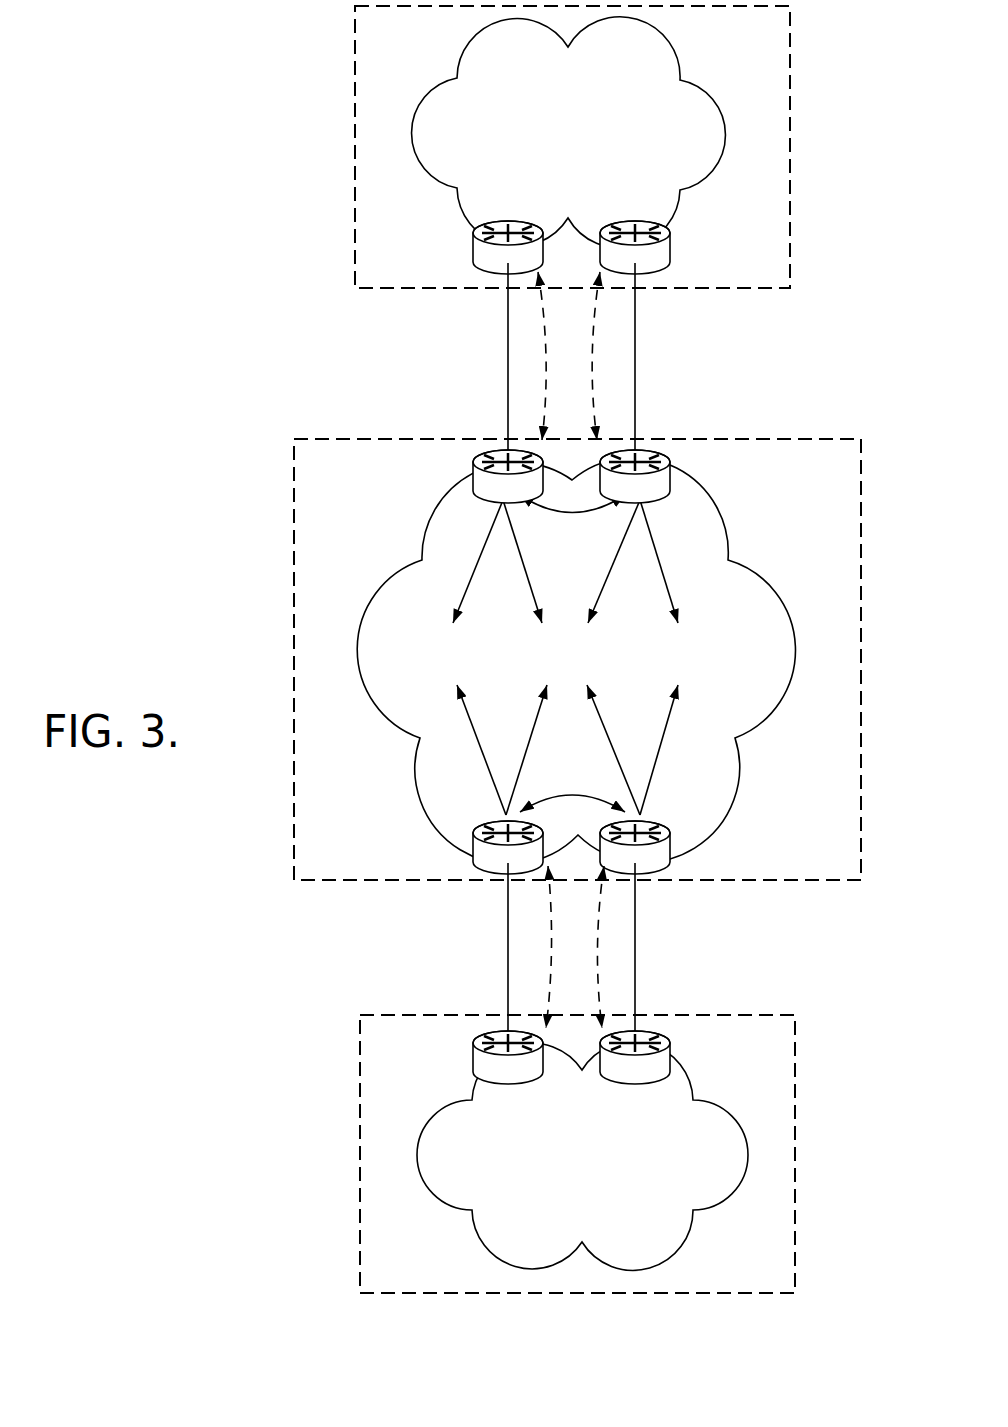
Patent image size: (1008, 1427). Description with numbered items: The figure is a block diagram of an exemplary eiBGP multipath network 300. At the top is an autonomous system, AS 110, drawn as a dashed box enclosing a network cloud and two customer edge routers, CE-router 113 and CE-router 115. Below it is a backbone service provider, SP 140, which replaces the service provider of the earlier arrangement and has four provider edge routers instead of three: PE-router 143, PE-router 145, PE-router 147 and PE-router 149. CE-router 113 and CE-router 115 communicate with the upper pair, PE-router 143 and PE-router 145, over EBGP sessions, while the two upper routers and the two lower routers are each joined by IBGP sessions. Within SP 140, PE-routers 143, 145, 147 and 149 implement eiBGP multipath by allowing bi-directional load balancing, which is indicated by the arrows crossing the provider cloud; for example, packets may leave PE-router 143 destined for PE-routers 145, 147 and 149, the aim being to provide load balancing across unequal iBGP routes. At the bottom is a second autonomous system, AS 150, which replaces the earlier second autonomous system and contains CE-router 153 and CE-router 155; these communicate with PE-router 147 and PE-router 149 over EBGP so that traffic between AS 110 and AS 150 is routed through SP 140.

The eiBGP multipath network 300 is at (175, 215).
The AS 110 is at (355, 102).
The CE-router 113 is at (488, 266).
The CE-router 115 is at (648, 266).
The SP 140 is at (293, 607).
The PE-router 143 is at (492, 447).
The PE-router 145 is at (653, 448).
The PE-router 147 is at (490, 866).
The PE-router 149 is at (660, 866).
The AS 150 is at (360, 1157).
The CE-router 153 is at (493, 1030).
The CE-router 155 is at (655, 1028).